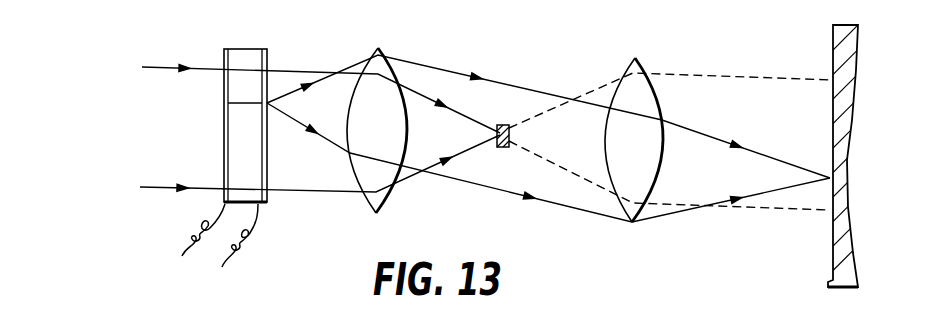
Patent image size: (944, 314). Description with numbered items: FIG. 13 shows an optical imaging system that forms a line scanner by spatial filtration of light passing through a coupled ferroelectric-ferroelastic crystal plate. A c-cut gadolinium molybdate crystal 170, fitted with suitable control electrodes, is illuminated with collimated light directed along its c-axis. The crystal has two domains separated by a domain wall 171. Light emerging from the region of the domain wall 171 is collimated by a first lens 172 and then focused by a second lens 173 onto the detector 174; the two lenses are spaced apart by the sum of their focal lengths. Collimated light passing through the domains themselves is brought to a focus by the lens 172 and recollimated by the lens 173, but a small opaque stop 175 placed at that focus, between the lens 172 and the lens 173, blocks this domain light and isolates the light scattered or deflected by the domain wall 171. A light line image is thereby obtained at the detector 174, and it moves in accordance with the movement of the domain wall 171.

The gadolinium molybdate crystal 170 is at (245, 200).
The domain wall 171 is at (243, 103).
The lens 172 is at (375, 47).
The lens 173 is at (634, 57).
The detector 174 is at (833, 60).
The opaque stop 175 is at (503, 124).